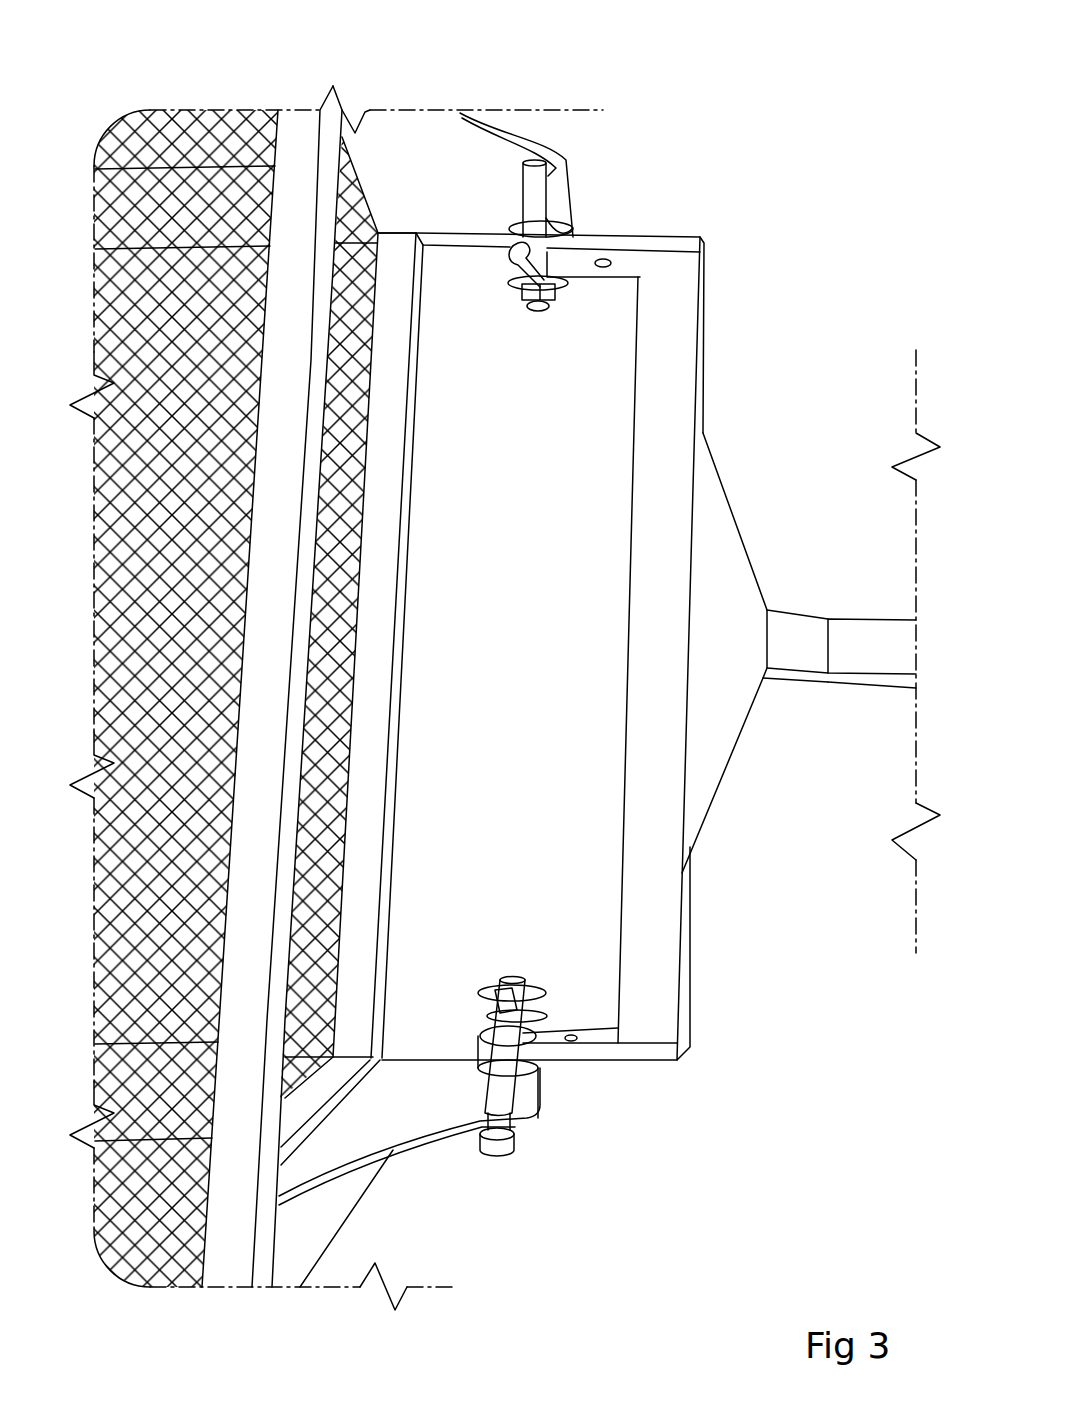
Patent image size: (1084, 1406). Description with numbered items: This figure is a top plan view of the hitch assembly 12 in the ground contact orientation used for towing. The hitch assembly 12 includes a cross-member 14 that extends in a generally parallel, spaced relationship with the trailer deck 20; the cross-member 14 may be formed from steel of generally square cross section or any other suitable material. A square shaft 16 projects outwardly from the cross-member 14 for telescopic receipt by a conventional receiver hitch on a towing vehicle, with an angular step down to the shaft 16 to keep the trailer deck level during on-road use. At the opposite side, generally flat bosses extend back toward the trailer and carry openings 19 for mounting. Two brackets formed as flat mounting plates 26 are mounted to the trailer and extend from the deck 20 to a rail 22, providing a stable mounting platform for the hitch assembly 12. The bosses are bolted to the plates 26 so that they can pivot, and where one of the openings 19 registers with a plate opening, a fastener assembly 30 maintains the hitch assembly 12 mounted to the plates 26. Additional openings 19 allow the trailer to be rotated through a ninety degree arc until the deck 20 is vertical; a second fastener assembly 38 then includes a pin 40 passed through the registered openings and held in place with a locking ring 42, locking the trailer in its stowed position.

The hitch assembly 12 is at (596, 683).
The cross-member 14 is at (657, 617).
The square shaft 16 is at (858, 638).
The openings 19 is at (569, 1031).
The trailer deck 20 is at (207, 303).
The rail 22 is at (278, 603).
The mounting plates 26 is at (457, 188).
The fastener assembly 30 is at (608, 211).
The second fastener assembly 38 is at (486, 1164).
The pin 40 is at (503, 1083).
The locking ring 42 is at (489, 996).